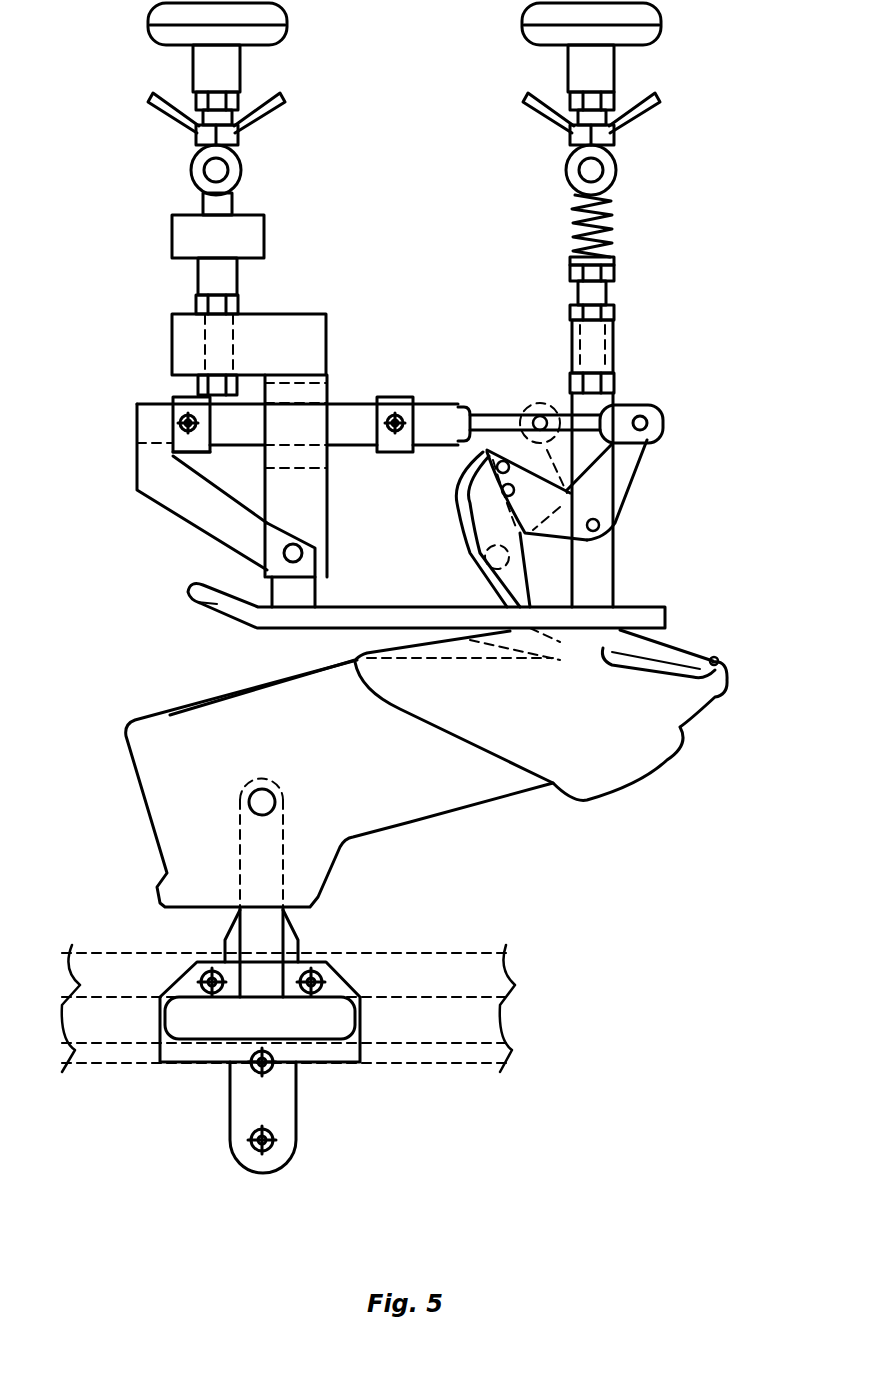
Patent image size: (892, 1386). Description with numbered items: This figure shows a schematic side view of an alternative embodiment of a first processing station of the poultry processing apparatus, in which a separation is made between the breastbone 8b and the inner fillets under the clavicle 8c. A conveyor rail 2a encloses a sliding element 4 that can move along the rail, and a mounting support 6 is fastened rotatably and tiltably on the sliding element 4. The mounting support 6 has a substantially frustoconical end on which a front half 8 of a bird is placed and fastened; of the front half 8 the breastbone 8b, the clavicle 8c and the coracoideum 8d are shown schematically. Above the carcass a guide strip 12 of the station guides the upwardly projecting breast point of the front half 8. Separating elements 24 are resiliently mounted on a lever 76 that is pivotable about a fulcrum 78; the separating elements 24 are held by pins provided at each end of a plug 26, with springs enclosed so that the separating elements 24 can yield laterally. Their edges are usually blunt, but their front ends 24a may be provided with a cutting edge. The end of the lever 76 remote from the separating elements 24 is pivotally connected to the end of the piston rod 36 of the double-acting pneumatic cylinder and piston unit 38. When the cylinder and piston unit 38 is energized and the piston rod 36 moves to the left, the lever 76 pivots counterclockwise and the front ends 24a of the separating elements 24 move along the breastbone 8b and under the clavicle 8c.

The conveyor rail 2a is at (130, 1027).
The sliding element 4 is at (192, 982).
The mounting support 6 is at (207, 813).
The front half 8 is at (650, 808).
The breastbone 8b is at (463, 650).
The clavicle 8c is at (672, 640).
The coracoideum 8d is at (718, 660).
The guide strip 12 is at (200, 596).
The separating element 24 is at (475, 500).
The front end 24a is at (540, 612).
The plug 26 is at (503, 485).
The piston rod 36 is at (503, 410).
The cylinder and piston unit 38 is at (347, 410).
The lever 76 is at (633, 460).
The fulcrum 78 is at (600, 525).